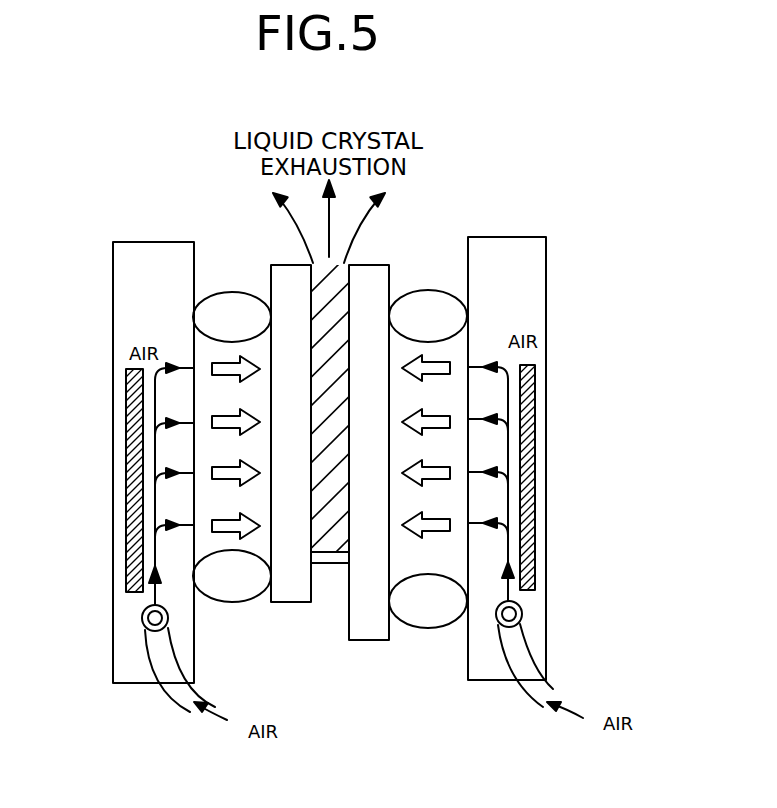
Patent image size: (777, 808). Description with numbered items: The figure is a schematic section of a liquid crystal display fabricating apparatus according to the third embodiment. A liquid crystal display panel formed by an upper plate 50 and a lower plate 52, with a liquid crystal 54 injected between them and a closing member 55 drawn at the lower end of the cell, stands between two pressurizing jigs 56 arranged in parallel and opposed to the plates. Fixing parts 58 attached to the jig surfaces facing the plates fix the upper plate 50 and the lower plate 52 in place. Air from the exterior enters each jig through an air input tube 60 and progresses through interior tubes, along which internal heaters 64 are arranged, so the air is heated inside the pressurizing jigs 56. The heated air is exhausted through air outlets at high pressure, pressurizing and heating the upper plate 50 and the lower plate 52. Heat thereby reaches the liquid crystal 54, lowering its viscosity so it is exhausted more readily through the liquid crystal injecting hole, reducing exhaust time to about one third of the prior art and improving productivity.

The upper plate 50 is at (287, 272).
The lower plate 52 is at (370, 273).
The liquid crystal 54 is at (189, 415).
The sealant 55 is at (330, 563).
The pressurizing jigs 56 is at (113, 288).
The fixing parts 58 is at (229, 292).
The air input tubes 60 is at (160, 665).
The internal heaters 64 is at (130, 512).